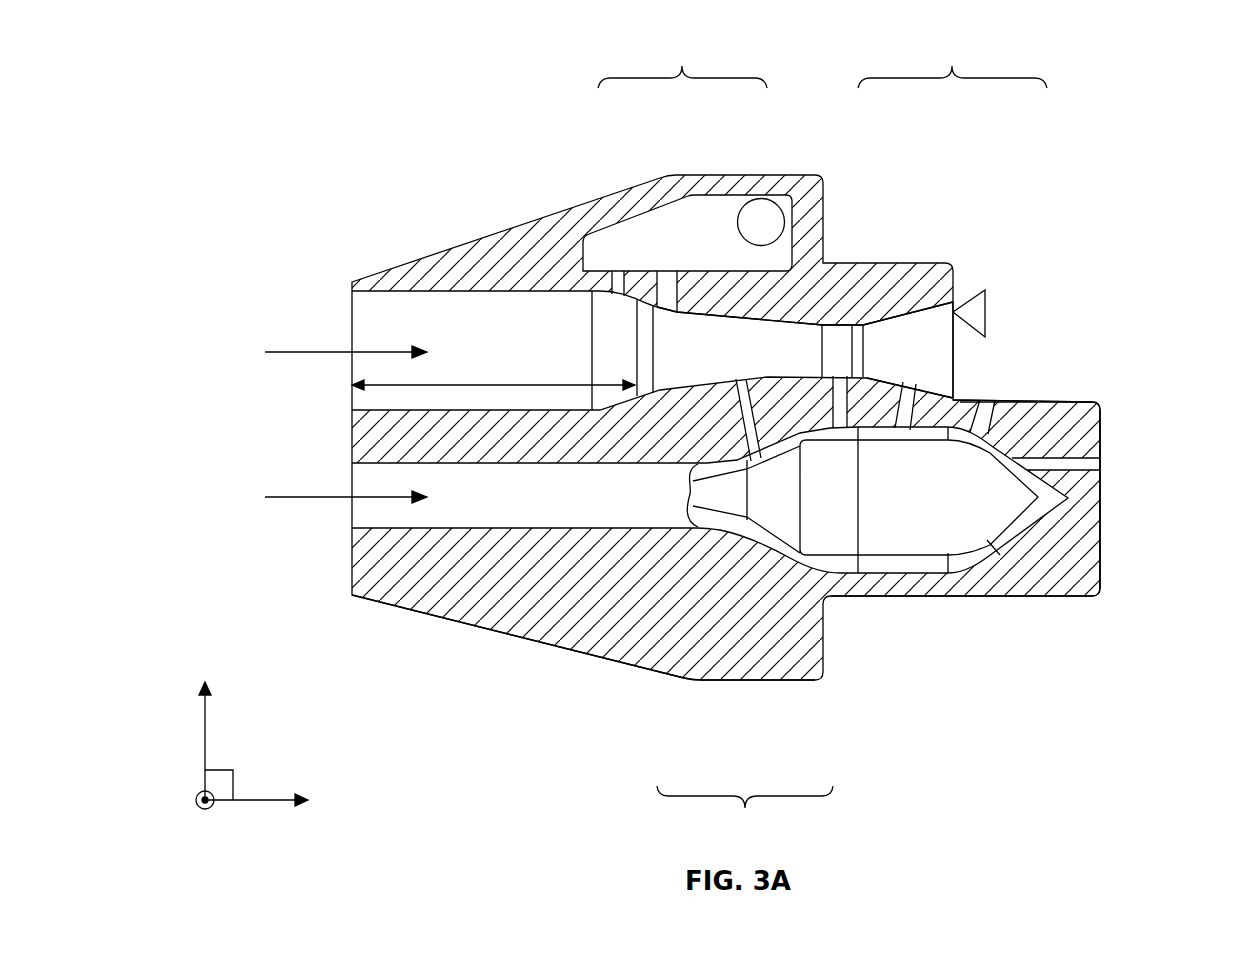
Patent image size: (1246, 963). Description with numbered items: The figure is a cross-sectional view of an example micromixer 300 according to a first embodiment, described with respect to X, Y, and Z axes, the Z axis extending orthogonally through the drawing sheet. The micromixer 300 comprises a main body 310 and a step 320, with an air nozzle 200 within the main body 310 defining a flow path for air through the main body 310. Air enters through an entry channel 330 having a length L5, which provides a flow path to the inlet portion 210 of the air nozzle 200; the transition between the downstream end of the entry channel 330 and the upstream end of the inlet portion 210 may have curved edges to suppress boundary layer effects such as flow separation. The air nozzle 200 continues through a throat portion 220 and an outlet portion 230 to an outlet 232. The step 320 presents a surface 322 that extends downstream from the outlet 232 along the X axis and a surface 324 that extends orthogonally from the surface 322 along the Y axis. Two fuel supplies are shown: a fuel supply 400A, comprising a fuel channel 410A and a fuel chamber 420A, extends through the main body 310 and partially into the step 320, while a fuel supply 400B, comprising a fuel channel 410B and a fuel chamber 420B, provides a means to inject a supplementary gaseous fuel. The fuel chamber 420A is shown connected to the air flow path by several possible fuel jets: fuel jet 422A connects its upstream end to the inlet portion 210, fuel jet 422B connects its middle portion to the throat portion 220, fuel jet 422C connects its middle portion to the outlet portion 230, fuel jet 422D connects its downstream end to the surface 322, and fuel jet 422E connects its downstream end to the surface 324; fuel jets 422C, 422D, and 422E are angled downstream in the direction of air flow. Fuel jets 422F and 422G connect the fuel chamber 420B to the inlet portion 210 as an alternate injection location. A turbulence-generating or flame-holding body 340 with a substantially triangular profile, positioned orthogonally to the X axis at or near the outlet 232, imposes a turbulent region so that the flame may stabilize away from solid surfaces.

The micromixer 300 is at (409, 116).
The entry channel 330 is at (375, 325).
The main body 310 is at (435, 575).
The step 320 is at (1088, 435).
The surface of step 322 is at (1083, 400).
The surface of step 324 is at (1100, 515).
The turbulence-generating or flame-holding body 340 is at (980, 285).
The outlet 232 is at (957, 365).
The air nozzle 200 is at (952, 61).
The inlet portion 210 is at (745, 325).
The throat portion 220 is at (840, 323).
The outlet portion 230 is at (915, 333).
The fuel supply 400A is at (745, 815).
The fuel channel 410A is at (567, 507).
The fuel chamber 420A is at (912, 508).
The fuel supply 400B is at (682, 60).
The fuel channel 410B is at (768, 212).
The fuel chamber 420B is at (672, 220).
The fuel jet 422A is at (745, 392).
The fuel jet 422B is at (840, 378).
The fuel jet 422C is at (902, 417).
The fuel jet 422D is at (1000, 390).
The fuel jet 422E is at (1100, 463).
The fuel jet 422F is at (617, 277).
The fuel jet 422G is at (668, 280).
The length of entry channel L5 is at (508, 383).